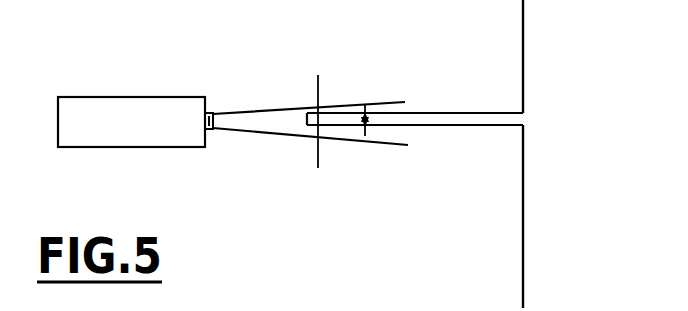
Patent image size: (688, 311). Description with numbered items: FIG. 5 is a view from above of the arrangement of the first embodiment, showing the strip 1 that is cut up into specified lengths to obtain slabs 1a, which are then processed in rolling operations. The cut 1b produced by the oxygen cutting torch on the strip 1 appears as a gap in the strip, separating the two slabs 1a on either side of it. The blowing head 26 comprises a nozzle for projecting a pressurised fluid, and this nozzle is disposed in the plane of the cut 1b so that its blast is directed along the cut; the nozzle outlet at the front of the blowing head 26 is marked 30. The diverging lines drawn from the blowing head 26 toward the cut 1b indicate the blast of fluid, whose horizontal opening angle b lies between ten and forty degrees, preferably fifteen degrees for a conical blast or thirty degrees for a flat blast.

The strip 1 is at (405, 154).
The slab 1a is at (518, 15).
The cut 1b is at (518, 122).
The blowing head 26 is at (66, 152).
The emitter aperture 30 is at (211, 112).
The horizontal opening angle b is at (373, 109).